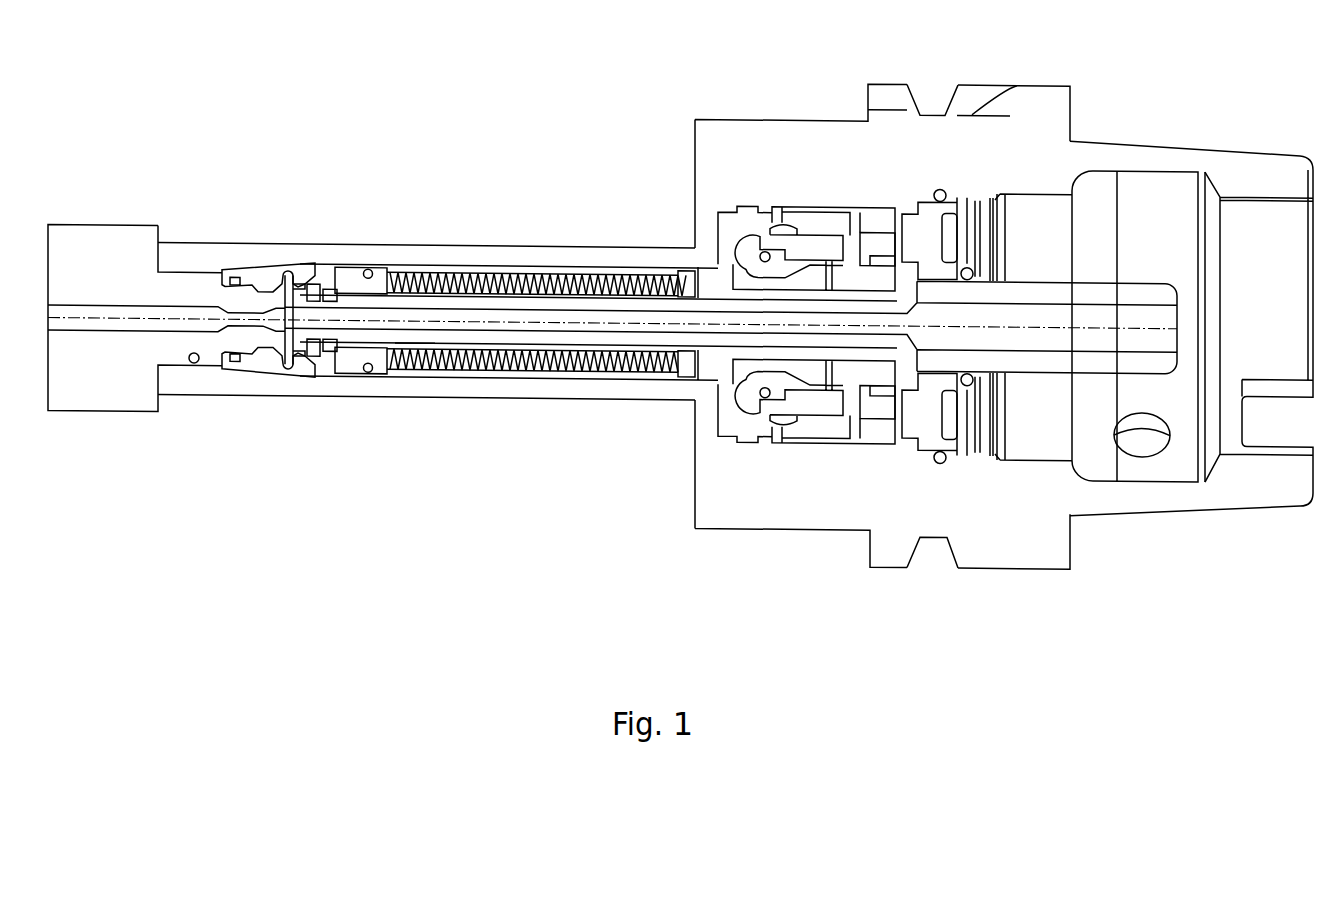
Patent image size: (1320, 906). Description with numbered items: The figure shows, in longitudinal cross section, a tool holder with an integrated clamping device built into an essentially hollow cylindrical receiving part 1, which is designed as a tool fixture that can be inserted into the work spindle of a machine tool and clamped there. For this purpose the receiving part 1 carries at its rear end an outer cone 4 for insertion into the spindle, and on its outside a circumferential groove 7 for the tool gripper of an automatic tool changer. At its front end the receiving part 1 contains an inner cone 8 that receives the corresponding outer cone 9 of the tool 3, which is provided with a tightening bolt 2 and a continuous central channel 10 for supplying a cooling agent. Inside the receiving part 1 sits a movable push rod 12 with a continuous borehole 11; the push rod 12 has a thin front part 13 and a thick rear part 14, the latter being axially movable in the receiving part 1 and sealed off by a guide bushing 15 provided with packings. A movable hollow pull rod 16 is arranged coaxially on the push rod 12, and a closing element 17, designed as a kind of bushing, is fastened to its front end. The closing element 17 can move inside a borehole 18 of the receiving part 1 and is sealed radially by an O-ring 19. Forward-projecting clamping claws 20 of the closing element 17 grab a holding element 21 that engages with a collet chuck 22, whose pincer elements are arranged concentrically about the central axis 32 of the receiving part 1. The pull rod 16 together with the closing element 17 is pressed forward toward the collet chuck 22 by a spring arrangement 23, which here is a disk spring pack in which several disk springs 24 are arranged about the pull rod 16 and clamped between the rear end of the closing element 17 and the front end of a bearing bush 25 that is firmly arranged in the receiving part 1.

The receiving part 1 is at (882, 300).
The tightening bolt 2 is at (272, 378).
The tool 3 is at (135, 353).
The outer cone 4 is at (1154, 290).
The circumferential groove 7 is at (942, 298).
The inner cone 8 is at (246, 415).
The outer cone 9 is at (426, 273).
The central channel 10 is at (166, 238).
The borehole 11 is at (612, 390).
The push rod 12 is at (869, 279).
The thin front part 13 is at (598, 390).
The thick rear part 14 is at (1047, 294).
The guide bushing 15 is at (953, 348).
The pull rod 16 is at (509, 414).
The closing element 17 is at (380, 220).
The borehole 18 is at (538, 259).
The O-ring 19 is at (356, 414).
The clamping claws 20 is at (349, 249).
The holding element 21 is at (318, 251).
The collet chuck 22 is at (268, 201).
The spring arrangement 23 is at (509, 220).
The disk springs 24 is at (662, 223).
The bearing bush 25 is at (802, 292).
The central axis 32 is at (415, 412).